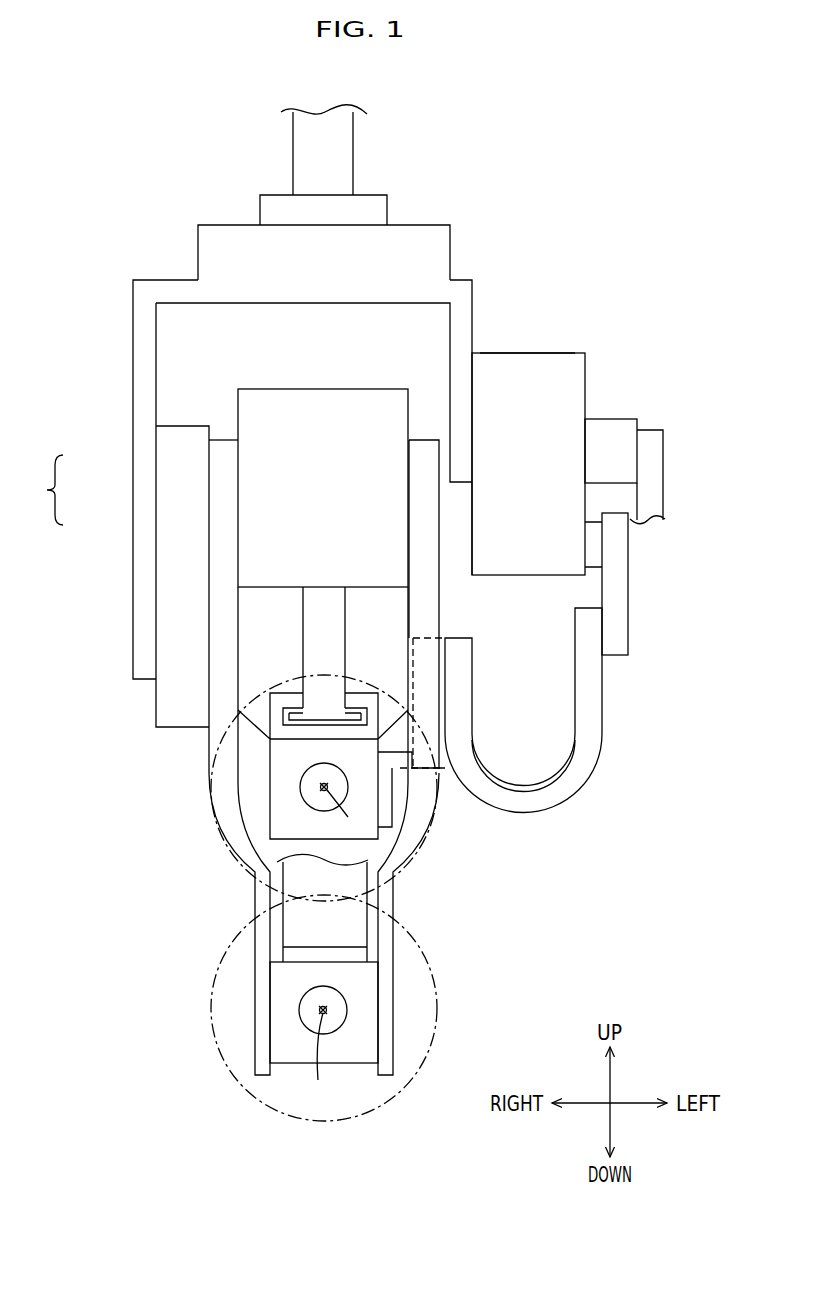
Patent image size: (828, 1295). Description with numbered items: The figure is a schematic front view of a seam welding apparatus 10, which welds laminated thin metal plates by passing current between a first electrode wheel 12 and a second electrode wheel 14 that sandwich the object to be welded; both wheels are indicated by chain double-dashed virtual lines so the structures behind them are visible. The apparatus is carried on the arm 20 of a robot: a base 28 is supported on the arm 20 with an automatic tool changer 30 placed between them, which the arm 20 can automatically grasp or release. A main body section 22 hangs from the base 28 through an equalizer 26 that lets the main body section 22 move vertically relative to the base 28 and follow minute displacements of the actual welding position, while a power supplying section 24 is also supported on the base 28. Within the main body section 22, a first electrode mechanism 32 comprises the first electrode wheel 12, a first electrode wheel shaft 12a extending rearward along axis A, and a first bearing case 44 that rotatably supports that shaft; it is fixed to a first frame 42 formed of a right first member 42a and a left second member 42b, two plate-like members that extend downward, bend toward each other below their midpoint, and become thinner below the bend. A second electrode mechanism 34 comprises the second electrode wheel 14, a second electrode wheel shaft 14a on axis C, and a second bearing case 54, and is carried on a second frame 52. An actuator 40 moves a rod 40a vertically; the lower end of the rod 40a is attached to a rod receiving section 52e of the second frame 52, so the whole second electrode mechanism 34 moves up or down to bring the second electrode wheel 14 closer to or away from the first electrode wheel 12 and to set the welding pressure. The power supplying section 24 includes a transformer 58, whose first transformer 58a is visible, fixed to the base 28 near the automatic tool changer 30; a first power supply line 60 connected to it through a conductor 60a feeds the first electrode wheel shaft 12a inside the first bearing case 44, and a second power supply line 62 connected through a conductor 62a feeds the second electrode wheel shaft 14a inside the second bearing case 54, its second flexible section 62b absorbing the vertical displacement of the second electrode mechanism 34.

The seam welding apparatus 10 is at (503, 130).
The first electrode wheel 12 is at (215, 1048).
The first electrode wheel shaft 12a is at (300, 1003).
The second electrode wheel 14 is at (218, 823).
The second electrode wheel shaft 14a is at (300, 778).
The arm 20 is at (337, 154).
The main body section 22 is at (478, 900).
The power supplying section 24 is at (605, 340).
The equalizer 26 is at (170, 695).
The base 28 is at (143, 347).
The automatic tool changer 30 is at (428, 250).
The first electrode mechanism 32 is at (435, 962).
The second electrode mechanism 34 is at (432, 842).
The actuator 40 is at (323, 405).
The rod 40a is at (318, 602).
The first frame 42 is at (226, 599).
The first member 42a is at (222, 467).
The second member 42b is at (430, 515).
The first bearing case 44 is at (362, 1032).
The second frame 52 is at (413, 612).
The rod receiving section 52e is at (358, 703).
The second bearing case 54 is at (290, 822).
The transformer 58 is at (560, 347).
The first transformer 58a is at (518, 370).
The first power supply line 60 is at (648, 463).
The conductor 60a is at (608, 432).
The second power supply line 62 is at (612, 690).
The conductor 62a is at (595, 552).
The second flexible section 62b is at (590, 733).